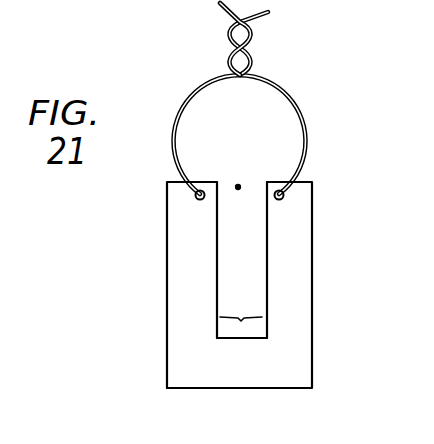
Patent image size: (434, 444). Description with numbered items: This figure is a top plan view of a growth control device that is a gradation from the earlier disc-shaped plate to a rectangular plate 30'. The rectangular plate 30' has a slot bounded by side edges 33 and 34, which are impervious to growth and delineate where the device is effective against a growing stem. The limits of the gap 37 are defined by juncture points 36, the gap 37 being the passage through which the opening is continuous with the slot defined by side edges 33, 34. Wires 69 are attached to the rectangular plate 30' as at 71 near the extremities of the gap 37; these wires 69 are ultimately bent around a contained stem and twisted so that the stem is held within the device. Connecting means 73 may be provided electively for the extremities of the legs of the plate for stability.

The wires 69 is at (212, 82).
The attachment points 71 is at (200, 200).
The rectangular plate 30' is at (270, 285).
The side edge 33 is at (217, 238).
The side edge 34 is at (265, 283).
The juncture points 36 is at (245, 329).
The gap 37 is at (239, 185).
The connecting means 73 is at (192, 375).